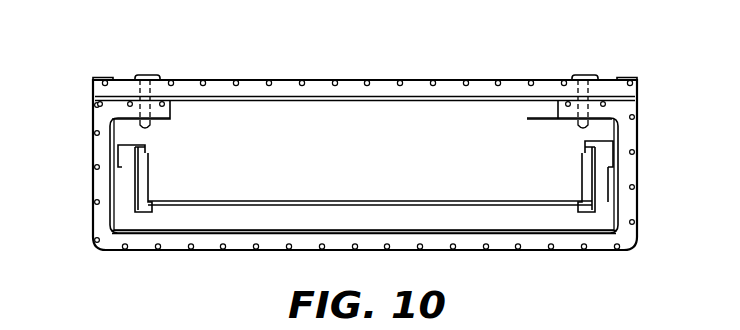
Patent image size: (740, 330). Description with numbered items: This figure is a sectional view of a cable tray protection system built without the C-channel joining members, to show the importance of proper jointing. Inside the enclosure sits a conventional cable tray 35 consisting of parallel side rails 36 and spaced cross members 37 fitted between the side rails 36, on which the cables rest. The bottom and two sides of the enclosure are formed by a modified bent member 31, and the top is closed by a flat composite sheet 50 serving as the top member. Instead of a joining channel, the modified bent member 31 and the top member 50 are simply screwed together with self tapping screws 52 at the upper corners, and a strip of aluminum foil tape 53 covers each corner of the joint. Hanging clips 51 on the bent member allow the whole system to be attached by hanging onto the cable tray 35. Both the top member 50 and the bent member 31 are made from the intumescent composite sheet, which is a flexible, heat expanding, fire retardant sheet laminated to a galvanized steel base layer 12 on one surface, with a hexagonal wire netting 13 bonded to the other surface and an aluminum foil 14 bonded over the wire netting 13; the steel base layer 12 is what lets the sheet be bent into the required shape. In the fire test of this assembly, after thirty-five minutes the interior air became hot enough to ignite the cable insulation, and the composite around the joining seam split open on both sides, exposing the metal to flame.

The flat composite sheet 50 is at (413, 79).
The galvanized steel base layer 12 is at (521, 106).
The hexagonal wire netting 13 is at (533, 79).
The aluminum foil 14 is at (318, 79).
The modified bent member 31 is at (227, 254).
The cable tray 35 is at (384, 199).
The side rails 36 is at (588, 174).
The cross members 37 is at (461, 200).
The hanging clips 51 is at (143, 143).
The self tapping screws 52 is at (146, 74).
The aluminum foil tape 53 is at (89, 78).